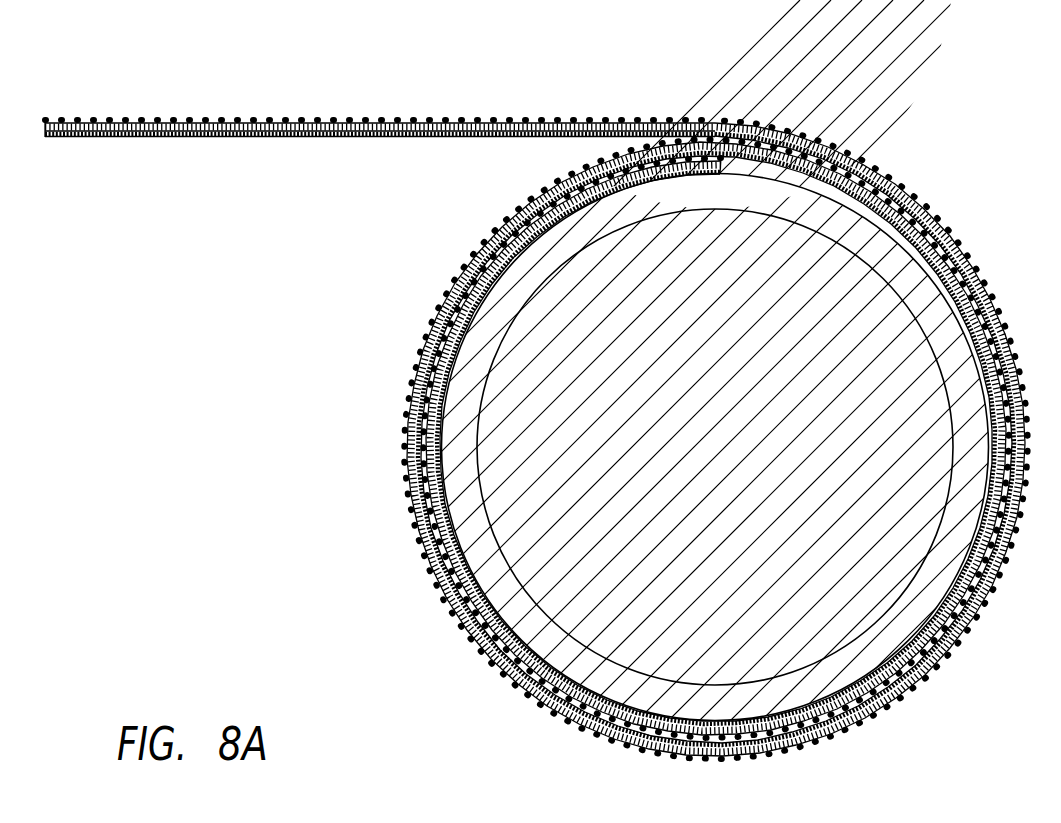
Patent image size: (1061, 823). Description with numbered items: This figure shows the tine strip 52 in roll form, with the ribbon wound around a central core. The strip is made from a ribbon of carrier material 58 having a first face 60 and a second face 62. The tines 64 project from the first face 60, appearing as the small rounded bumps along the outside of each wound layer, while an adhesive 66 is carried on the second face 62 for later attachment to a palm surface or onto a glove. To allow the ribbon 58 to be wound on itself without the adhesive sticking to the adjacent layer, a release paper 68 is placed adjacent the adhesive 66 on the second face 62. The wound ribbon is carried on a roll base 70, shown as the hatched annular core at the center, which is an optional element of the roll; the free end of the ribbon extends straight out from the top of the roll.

The tine strip 52 is at (976, 154).
The ribbon of carrier material 58 is at (60, 120).
The first face 60 is at (91, 110).
The second face 62 is at (72, 142).
The tines 64 is at (244, 117).
The adhesive 66 is at (99, 131).
The release paper 68 is at (173, 138).
The roll base 70 is at (713, 209).